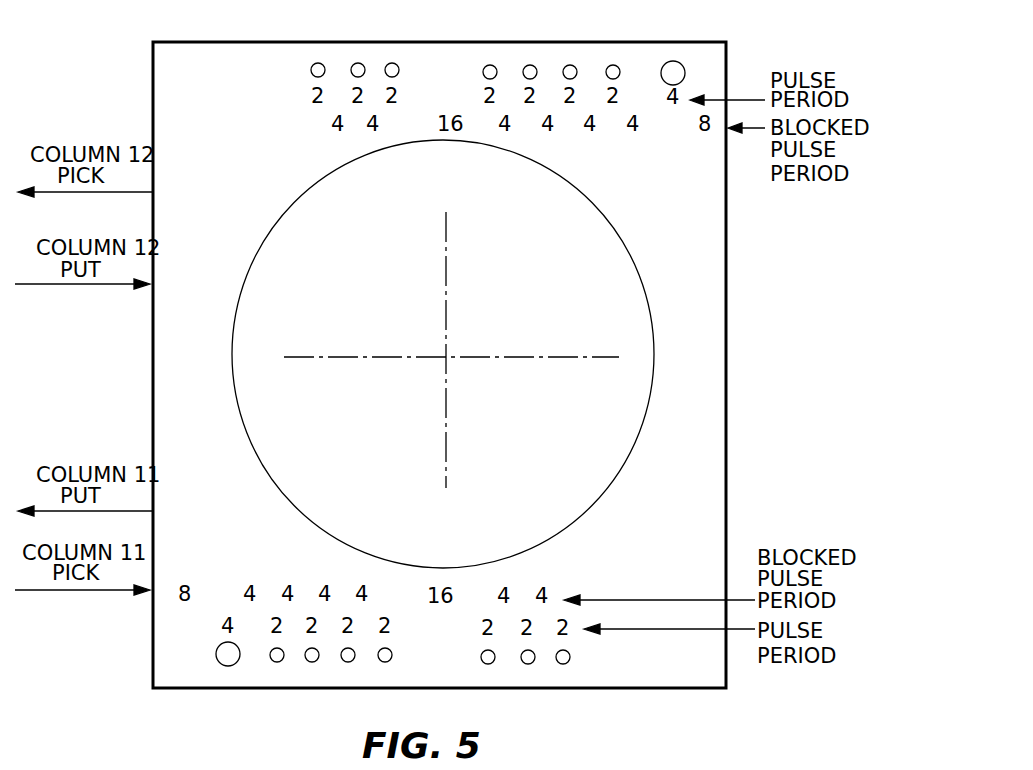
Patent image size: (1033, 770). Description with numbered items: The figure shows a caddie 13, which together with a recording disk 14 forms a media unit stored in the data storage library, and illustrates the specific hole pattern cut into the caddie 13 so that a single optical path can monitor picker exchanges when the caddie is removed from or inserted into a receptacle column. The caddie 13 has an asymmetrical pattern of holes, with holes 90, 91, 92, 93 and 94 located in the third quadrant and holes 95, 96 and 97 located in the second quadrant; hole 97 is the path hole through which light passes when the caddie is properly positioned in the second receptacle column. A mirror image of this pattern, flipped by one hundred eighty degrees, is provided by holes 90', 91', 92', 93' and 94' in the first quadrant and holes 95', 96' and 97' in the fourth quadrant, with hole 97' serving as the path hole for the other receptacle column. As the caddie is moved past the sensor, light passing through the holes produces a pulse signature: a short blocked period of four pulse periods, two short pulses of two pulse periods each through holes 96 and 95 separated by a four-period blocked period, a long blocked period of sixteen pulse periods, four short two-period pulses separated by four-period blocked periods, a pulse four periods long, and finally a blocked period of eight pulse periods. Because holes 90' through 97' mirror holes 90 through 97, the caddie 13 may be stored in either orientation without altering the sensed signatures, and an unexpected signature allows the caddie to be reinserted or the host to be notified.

The caddie 13 is at (713, 457).
The recording disk 14 is at (620, 427).
The hole 90 is at (691, 47).
The hole 91 is at (625, 44).
The hole 92 is at (579, 44).
The hole 93 is at (538, 44).
The hole 94 is at (497, 44).
The hole 95 is at (400, 42).
The hole 96 is at (359, 42).
The path hole 97 is at (319, 42).
The hole 90' is at (208, 682).
The hole 91' is at (258, 685).
The hole 92' is at (301, 685).
The hole 93' is at (350, 685).
The hole 94' is at (396, 685).
The hole 95' is at (473, 686).
The hole 96' is at (524, 686).
The path hole 97' is at (575, 686).